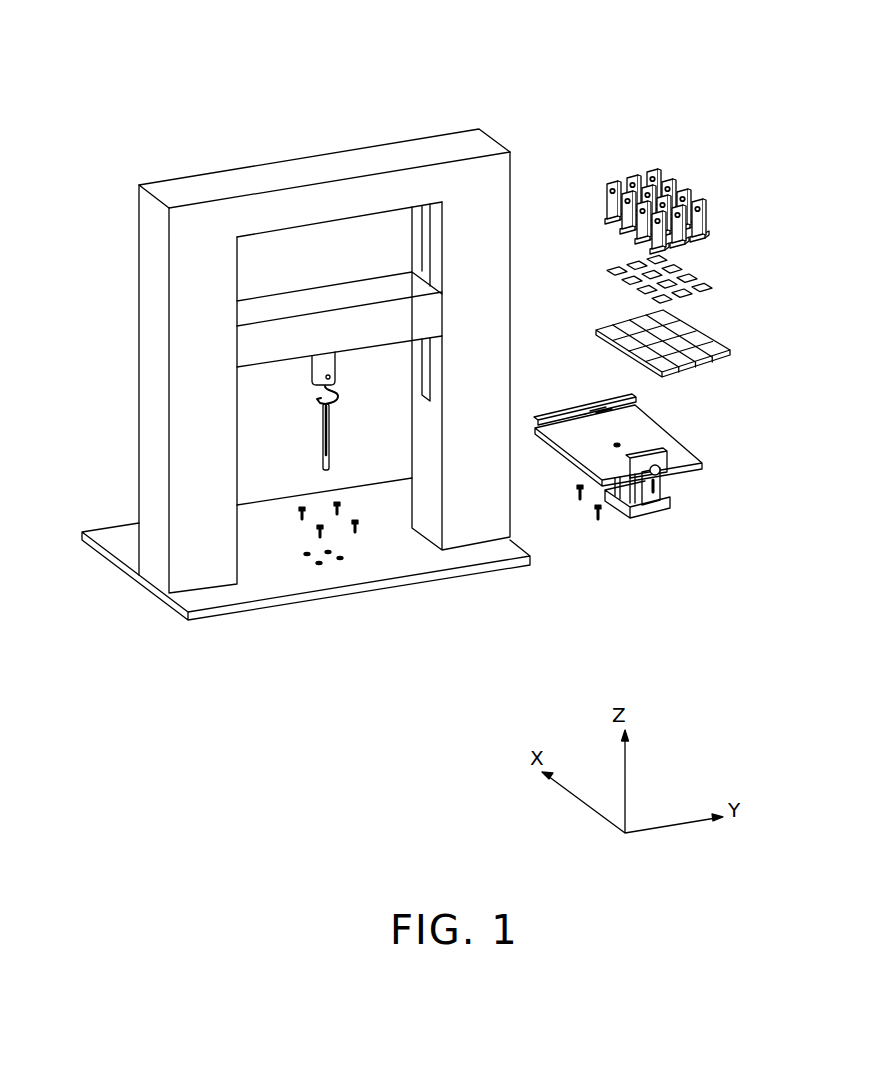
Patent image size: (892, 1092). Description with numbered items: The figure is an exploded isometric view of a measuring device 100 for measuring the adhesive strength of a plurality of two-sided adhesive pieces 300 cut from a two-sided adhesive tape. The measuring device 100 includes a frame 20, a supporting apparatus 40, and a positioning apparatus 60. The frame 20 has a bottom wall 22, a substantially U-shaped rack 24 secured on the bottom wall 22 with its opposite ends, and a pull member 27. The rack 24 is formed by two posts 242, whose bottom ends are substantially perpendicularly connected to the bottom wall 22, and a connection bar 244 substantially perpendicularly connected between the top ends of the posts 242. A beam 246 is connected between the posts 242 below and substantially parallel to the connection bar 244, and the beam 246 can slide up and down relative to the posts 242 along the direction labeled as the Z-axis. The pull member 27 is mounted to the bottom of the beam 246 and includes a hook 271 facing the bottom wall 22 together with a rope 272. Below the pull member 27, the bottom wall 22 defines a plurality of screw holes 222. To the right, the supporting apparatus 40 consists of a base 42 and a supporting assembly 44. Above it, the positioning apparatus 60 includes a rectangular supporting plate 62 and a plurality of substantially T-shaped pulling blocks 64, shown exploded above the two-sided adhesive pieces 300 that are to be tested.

The measuring device 100 is at (307, 60).
The frame 20 is at (528, 148).
The bottom wall 22 is at (223, 612).
The screw holes 222 is at (341, 561).
The rack 24 is at (138, 227).
The posts 242 is at (193, 282).
The connection bar 244 is at (325, 197).
The beam 246 is at (400, 320).
The pull member 27 is at (327, 364).
The hook 271 is at (314, 402).
The rope 272 is at (327, 443).
The supporting apparatus 40 is at (756, 435).
The base 42 is at (662, 490).
The supporting assembly 44 is at (680, 458).
The positioning apparatus 60 is at (775, 210).
The supporting plate 62 is at (707, 328).
The pulling blocks 64 is at (707, 228).
The two-sided adhesive pieces 300 is at (614, 270).